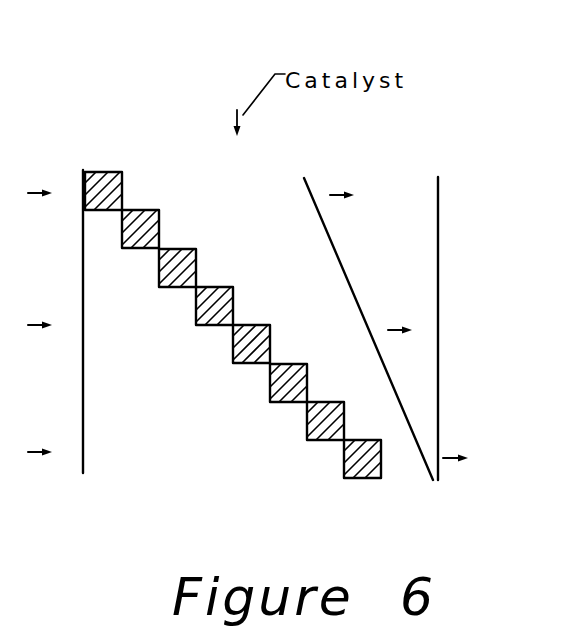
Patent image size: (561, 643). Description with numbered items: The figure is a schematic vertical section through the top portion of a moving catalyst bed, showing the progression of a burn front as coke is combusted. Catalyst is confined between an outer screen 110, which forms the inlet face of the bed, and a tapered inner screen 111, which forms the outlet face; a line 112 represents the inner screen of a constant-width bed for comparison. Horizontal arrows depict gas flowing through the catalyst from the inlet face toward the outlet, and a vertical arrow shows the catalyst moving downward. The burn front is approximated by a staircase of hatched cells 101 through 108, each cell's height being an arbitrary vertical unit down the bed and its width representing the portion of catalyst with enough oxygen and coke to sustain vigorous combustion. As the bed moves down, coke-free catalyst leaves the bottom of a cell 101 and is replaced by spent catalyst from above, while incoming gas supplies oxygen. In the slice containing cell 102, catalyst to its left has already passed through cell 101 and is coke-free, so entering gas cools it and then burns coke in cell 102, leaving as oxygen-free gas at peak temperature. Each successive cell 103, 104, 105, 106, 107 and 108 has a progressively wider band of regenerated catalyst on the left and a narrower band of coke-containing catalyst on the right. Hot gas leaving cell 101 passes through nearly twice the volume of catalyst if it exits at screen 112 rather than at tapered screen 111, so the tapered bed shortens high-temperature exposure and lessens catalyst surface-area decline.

The cell 101 is at (125, 193).
The cell 102 is at (165, 227).
The cell 103 is at (200, 270).
The cell 104 is at (237, 308).
The cell 105 is at (237, 345).
The cell 106 is at (272, 385).
The cell 107 is at (308, 425).
The cell 108 is at (344, 462).
The outer screen 110 is at (84, 333).
The tapered inner screen 111 is at (343, 268).
The inner screen of a constant width bed 112 is at (438, 252).